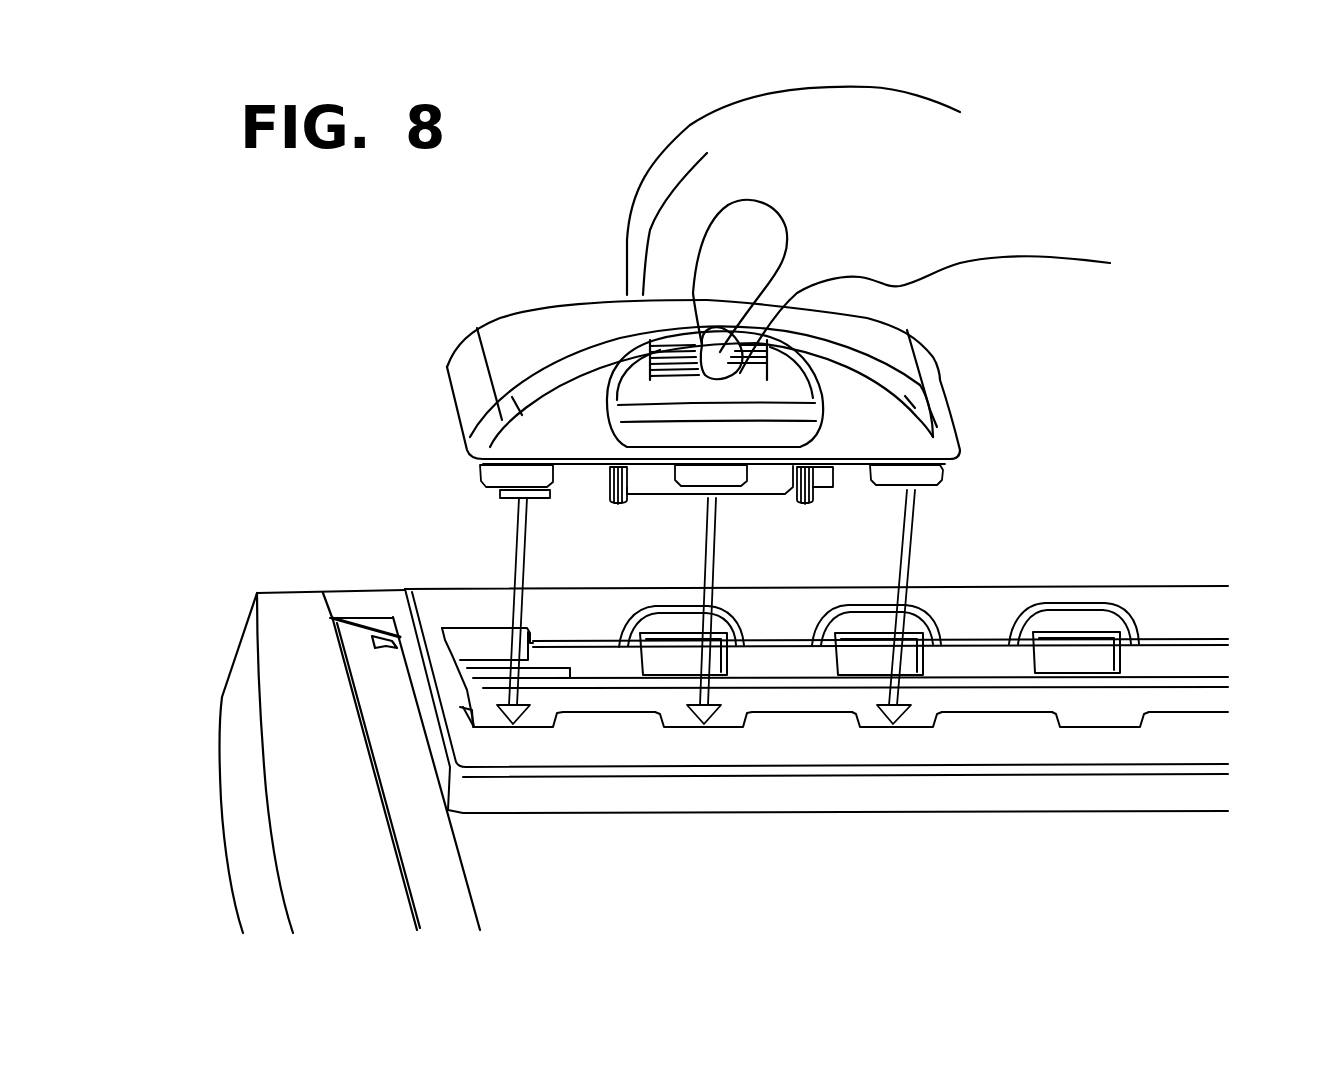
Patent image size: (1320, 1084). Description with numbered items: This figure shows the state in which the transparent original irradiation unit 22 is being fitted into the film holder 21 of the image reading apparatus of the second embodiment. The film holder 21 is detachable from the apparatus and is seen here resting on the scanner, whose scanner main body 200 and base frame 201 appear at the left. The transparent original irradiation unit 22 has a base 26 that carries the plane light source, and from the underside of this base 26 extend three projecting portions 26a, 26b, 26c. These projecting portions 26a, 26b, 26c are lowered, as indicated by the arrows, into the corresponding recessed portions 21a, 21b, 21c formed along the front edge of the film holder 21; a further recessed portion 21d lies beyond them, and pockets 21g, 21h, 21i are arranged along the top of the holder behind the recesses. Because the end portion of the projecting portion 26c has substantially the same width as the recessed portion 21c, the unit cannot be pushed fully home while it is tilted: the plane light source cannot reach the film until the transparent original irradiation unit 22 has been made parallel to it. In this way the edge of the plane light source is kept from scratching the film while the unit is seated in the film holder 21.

The transparent original irradiation unit 22 is at (504, 288).
The base 26 is at (777, 488).
The projecting portion 26a is at (539, 473).
The projecting portion 26b is at (726, 473).
The projecting portion 26c is at (931, 470).
The film holder 21 is at (1035, 601).
The recessed portion 21a is at (537, 720).
The recessed portion 21b is at (731, 720).
The recessed portion 21c is at (927, 720).
The engaging notch 21d is at (1103, 720).
The recess 21g is at (481, 650).
The recess 21h is at (671, 653).
The recess 21i is at (868, 650).
The scanner main body 200 is at (212, 645).
The base frame 201 is at (286, 612).